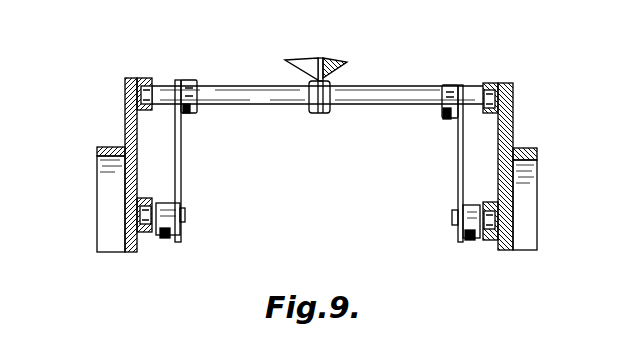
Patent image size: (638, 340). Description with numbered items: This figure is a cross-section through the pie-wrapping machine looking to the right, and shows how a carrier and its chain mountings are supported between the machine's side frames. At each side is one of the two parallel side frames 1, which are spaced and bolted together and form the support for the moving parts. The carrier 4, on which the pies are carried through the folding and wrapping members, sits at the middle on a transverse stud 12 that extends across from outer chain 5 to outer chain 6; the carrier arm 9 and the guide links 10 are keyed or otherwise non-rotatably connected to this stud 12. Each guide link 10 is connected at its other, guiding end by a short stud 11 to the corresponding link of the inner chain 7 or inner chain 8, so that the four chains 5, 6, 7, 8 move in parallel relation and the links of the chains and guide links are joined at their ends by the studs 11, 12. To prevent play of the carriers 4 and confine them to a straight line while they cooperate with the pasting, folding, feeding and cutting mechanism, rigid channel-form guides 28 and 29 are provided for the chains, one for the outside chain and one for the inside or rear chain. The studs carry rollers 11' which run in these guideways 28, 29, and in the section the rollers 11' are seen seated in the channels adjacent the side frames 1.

The side frame 1 is at (115, 180).
The carrier 4 is at (336, 66).
The chain 5 is at (448, 118).
The chain 6 is at (186, 112).
The chain 7 is at (463, 236).
The chain 8 is at (168, 238).
The carrier arm 9 is at (318, 98).
The guide link 10 is at (183, 180).
The stud 11 is at (318, 220).
The roller 11' is at (312, 159).
The stud 12 is at (197, 88).
The guide 28 is at (147, 78).
The guide 29 is at (130, 222).